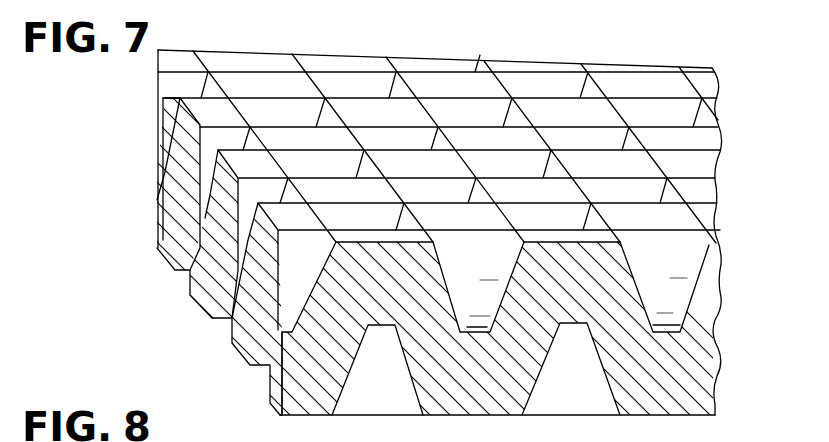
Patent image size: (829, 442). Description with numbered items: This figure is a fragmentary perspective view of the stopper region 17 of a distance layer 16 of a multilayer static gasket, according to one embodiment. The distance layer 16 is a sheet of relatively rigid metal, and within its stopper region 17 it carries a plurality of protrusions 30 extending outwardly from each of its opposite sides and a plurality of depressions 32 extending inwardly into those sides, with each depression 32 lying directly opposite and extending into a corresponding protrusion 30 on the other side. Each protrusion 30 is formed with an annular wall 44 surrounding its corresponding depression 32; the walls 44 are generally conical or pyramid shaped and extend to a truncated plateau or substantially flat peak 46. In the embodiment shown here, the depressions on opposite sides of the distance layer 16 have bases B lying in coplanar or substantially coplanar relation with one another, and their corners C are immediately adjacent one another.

The distance layer 16 is at (720, 93).
The stopper region 17 is at (718, 275).
The protrusions 30 is at (317, 136).
The depressions 32 is at (647, 190).
The annular wall 44 is at (403, 362).
The peak 46 is at (672, 226).
The base B is at (586, 325).
The corners C is at (203, 86).